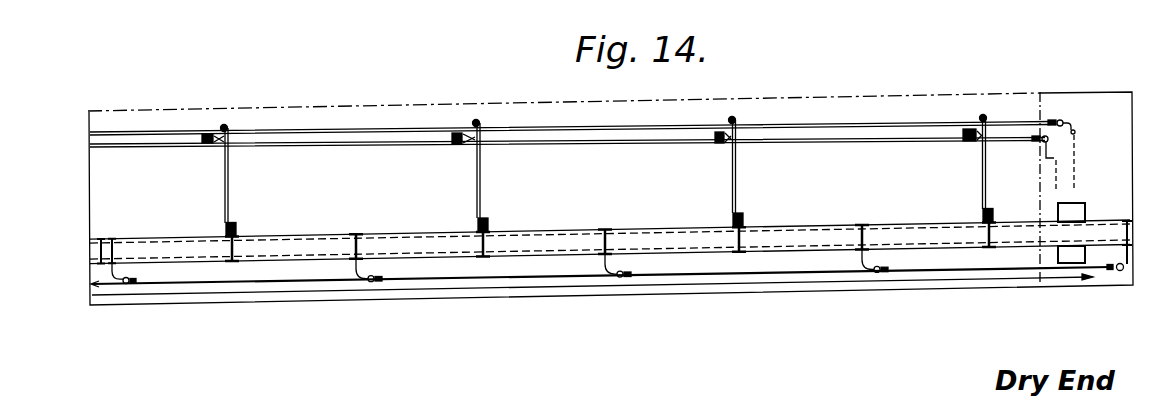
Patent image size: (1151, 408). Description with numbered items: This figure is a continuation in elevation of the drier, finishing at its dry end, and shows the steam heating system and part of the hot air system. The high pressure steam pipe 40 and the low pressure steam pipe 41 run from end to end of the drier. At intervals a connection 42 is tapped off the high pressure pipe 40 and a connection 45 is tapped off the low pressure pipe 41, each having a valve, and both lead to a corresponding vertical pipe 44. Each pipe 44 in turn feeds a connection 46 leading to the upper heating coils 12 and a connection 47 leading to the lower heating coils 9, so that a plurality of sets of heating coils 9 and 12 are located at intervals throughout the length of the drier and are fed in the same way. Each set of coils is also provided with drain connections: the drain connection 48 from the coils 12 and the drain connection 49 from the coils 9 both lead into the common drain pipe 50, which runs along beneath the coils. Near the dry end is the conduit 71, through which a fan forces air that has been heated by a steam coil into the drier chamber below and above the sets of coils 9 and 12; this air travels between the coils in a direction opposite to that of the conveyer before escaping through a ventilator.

The heating coil 9 is at (178, 265).
The heating coil 12 is at (154, 239).
The high pressure steam pipe 40 is at (143, 131).
The low pressure steam pipe 41 is at (404, 144).
The connection 42 is at (225, 125).
The pipe 44 is at (230, 183).
The connection 45 is at (205, 145).
The connection 46 is at (238, 226).
The connection 47 is at (236, 262).
The drain connection 48 is at (359, 236).
The drain connection 49 is at (360, 270).
The common drain pipe 50 is at (235, 286).
The conduit 71 is at (1084, 203).